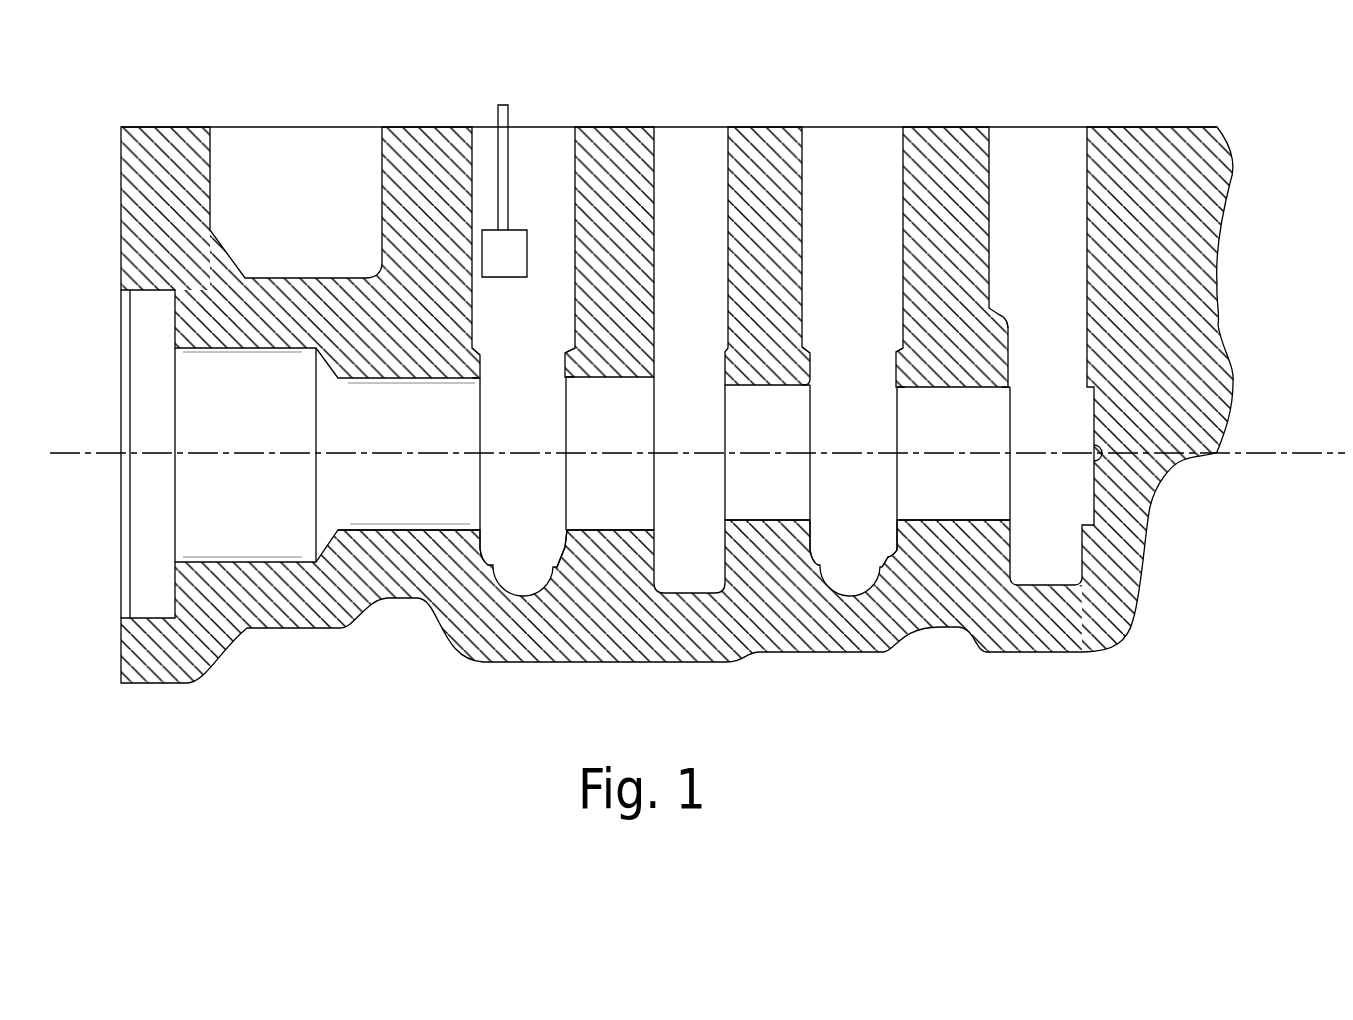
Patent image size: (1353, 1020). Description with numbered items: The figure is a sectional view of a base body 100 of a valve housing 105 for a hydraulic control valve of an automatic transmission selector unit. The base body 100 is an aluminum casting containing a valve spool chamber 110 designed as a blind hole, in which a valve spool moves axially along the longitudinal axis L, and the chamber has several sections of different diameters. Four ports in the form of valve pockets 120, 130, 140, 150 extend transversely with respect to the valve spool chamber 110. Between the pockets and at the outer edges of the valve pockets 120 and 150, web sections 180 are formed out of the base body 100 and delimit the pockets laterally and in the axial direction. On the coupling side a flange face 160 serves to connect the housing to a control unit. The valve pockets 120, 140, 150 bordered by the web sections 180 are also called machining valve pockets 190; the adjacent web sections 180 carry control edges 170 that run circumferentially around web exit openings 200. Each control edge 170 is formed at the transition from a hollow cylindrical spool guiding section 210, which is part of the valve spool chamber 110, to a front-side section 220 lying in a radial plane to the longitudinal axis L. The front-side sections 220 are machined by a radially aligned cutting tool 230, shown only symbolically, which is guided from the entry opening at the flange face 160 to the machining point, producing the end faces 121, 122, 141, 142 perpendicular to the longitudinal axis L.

The base body 100 is at (732, 370).
The valve housing 105 is at (1167, 97).
The valve spool chamber 110 is at (373, 513).
The valve pocket 120 is at (533, 140).
The end face 121 is at (488, 565).
The end face 122 is at (558, 573).
The valve pocket 130 is at (691, 150).
The valve pocket 140 is at (845, 140).
The end face 141 is at (813, 547).
The end face 142 is at (893, 545).
The valve pocket 150 is at (1038, 140).
The flange face 160 is at (419, 127).
The control edge 170 is at (773, 354).
The web section 180 is at (445, 282).
The machining valve pocket 190 is at (836, 229).
The web exit opening 200 is at (480, 373).
The spool guiding section 210 is at (444, 530).
The front-side section 220 is at (565, 375).
The cutting tool 230 is at (503, 105).
The longitudinal axis L is at (283, 453).